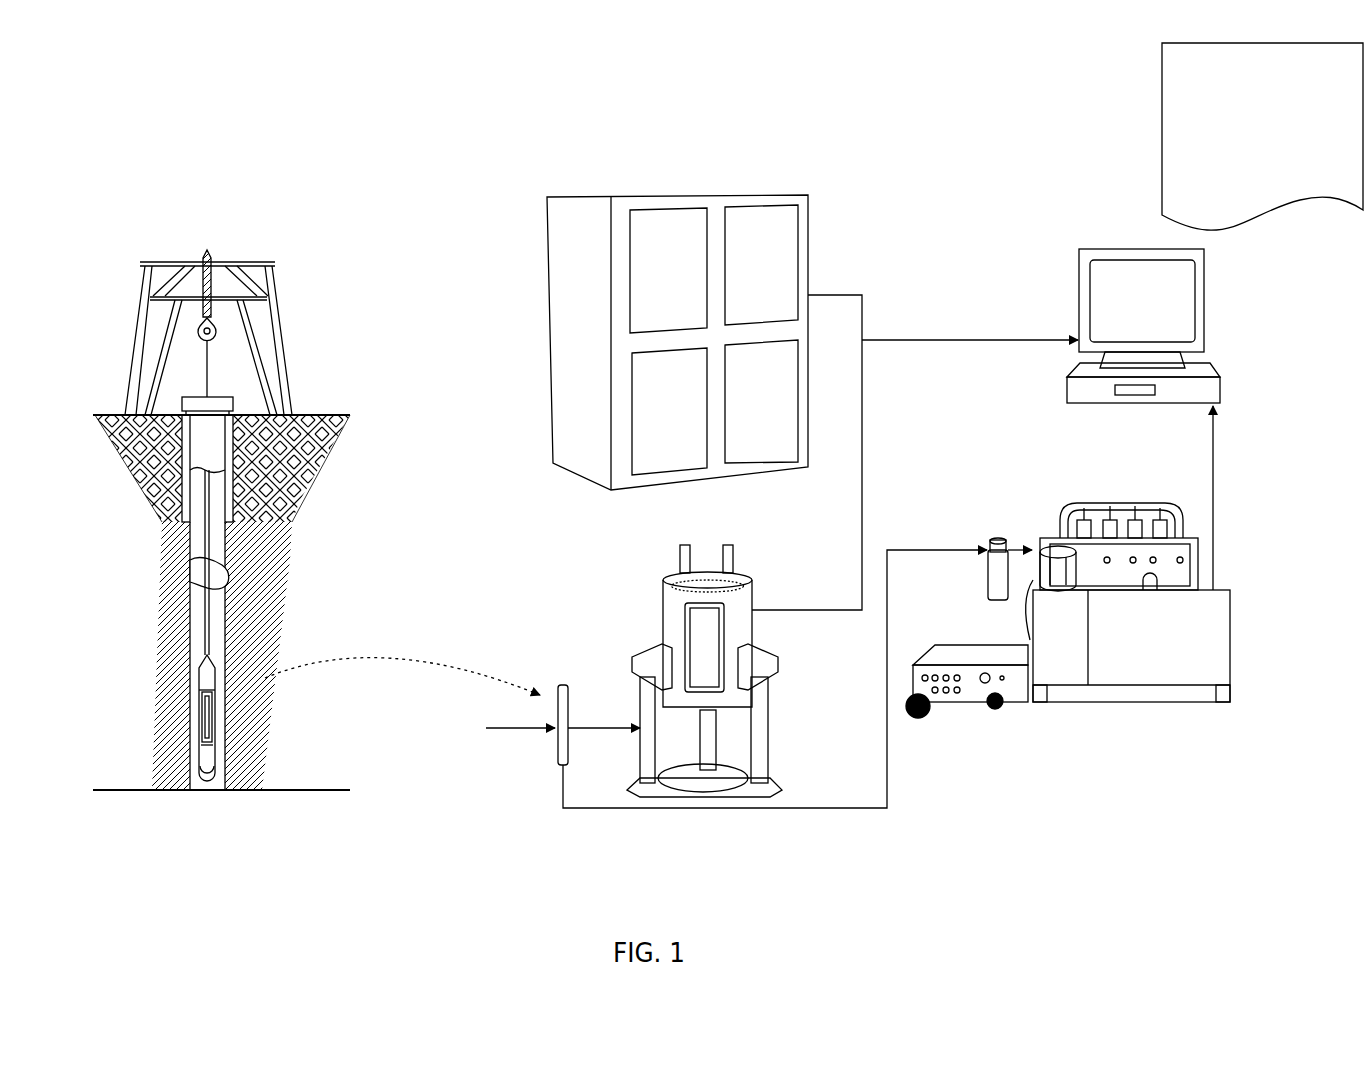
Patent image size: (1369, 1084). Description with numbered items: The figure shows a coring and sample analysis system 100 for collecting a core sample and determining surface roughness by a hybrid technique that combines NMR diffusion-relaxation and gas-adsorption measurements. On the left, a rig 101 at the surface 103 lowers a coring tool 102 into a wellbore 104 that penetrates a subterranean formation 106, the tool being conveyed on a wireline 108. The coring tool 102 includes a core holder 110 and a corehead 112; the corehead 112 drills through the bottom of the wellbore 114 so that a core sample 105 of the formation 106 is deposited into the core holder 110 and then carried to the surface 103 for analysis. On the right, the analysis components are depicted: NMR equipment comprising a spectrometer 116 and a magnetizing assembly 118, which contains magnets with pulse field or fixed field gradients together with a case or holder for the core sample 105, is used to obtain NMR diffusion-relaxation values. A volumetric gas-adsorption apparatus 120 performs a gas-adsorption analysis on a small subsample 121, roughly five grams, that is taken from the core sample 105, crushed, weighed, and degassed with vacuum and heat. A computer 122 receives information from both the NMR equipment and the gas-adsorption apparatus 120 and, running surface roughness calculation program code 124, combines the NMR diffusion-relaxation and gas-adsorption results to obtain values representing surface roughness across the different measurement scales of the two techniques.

The coring and sample analysis system 100 is at (122, 180).
The rig 101 is at (280, 297).
The coring tool 102 is at (224, 681).
The surface 103 is at (108, 413).
The wellbore 104 is at (255, 768).
The core sample 105 is at (197, 712).
The subterranean formation 106 is at (270, 620).
The wireline 108 is at (216, 549).
The core holder 110 is at (215, 738).
The corehead 112 is at (202, 783).
The bottom of the wellbore 114 is at (208, 795).
The spectrometer 116 is at (547, 329).
The magnetizing assembly 118 is at (660, 617).
The volumetric gas-adsorption apparatus 120 is at (1150, 706).
The subsample 121 is at (985, 589).
The computer 122 is at (1078, 259).
The surface roughness calculation program code 124 is at (1142, 247).